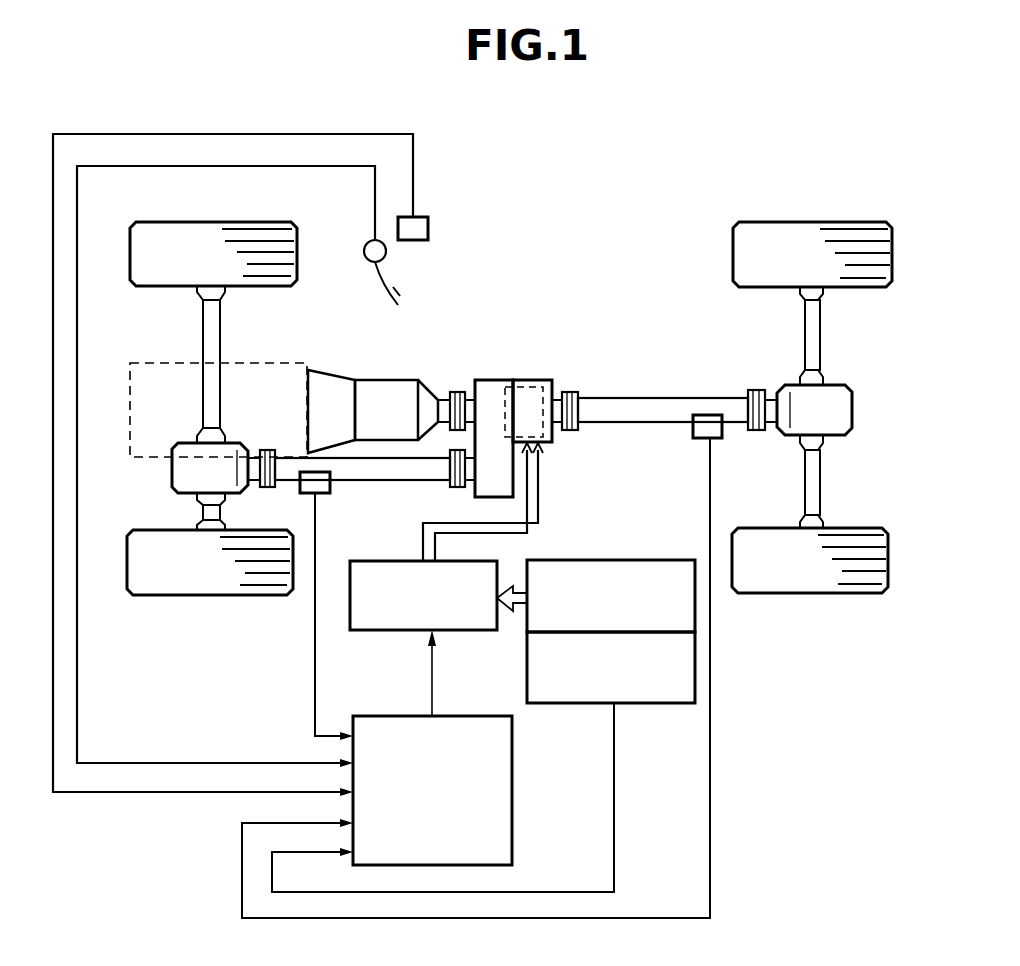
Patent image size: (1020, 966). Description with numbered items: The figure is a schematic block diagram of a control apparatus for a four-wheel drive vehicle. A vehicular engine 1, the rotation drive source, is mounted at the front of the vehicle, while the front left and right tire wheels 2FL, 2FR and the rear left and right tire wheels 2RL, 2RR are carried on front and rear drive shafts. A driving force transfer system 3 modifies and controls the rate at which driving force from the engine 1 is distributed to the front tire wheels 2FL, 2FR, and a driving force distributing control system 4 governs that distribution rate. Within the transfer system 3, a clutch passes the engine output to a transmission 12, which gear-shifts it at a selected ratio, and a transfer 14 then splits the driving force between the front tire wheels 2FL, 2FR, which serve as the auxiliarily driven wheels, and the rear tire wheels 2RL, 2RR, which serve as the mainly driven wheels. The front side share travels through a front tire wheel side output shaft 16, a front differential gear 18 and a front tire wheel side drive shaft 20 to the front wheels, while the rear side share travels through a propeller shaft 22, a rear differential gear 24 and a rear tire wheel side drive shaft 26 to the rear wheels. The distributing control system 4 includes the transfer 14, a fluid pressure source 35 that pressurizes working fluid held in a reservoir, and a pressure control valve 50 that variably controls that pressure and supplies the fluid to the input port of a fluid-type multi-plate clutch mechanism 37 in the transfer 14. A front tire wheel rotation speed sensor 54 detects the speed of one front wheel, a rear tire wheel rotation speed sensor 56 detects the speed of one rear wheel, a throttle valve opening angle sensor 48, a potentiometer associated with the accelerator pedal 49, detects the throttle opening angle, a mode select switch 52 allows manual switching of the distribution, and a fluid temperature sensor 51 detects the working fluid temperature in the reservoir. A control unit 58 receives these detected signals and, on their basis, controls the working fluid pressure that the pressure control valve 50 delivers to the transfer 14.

The vehicular engine 1 is at (265, 365).
The front right tire wheel 2FR is at (205, 235).
The front left tire wheel 2FL is at (210, 585).
The rear right tire wheel 2RR is at (820, 232).
The rear left tire wheel 2RL is at (815, 585).
The driving force transfer system 3 is at (512, 330).
The driving force distributing control system 4 is at (595, 526).
The transmission 12 is at (373, 387).
The transfer 14 is at (485, 380).
The front tire wheel side output shaft 16 is at (360, 478).
The front differential gear 18 is at (170, 490).
The front tire wheel side drive shaft 20 is at (203, 325).
The propeller shaft 22 is at (660, 398).
The rear differential gear 24 is at (845, 388).
The rear tire wheel side drive shaft 26 is at (822, 480).
The fluid pressure source 35 is at (626, 562).
The fluid-type multi-plate clutch mechanism 37 is at (535, 385).
The throttle valve opening angle sensor 48 is at (370, 242).
The accelerator pedal 49 is at (400, 286).
The pressure control valve 50 is at (475, 622).
The fluid temperature sensor 51 is at (650, 703).
The mode select switch 52 is at (430, 228).
The front tire wheel rotation speed sensor 54 is at (300, 490).
The rear tire wheel rotation speed sensor 56 is at (715, 440).
The control unit 58 is at (513, 795).